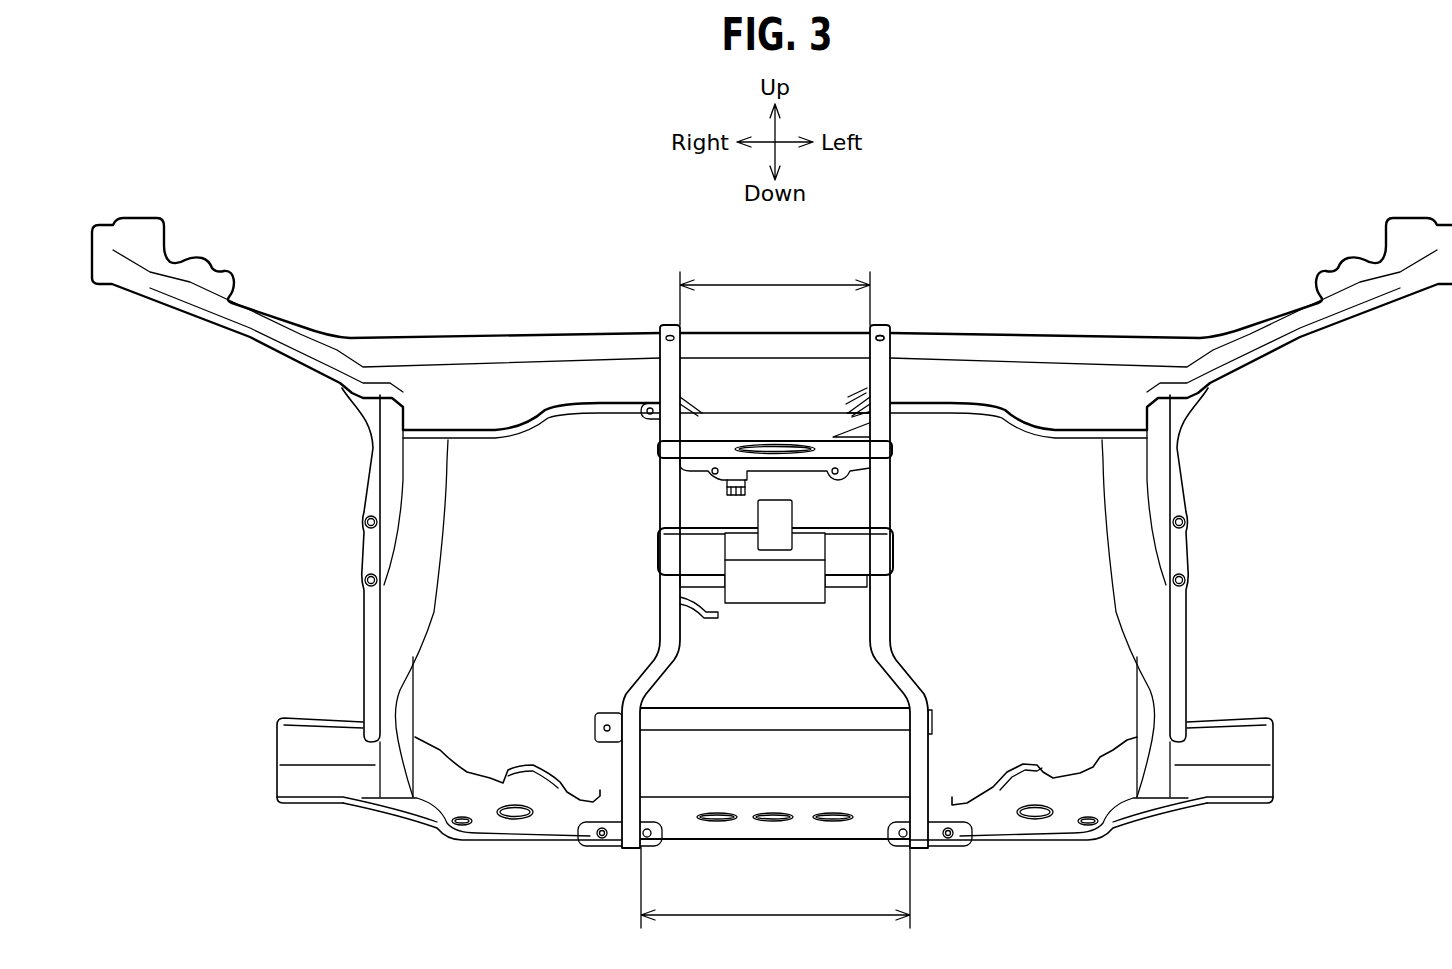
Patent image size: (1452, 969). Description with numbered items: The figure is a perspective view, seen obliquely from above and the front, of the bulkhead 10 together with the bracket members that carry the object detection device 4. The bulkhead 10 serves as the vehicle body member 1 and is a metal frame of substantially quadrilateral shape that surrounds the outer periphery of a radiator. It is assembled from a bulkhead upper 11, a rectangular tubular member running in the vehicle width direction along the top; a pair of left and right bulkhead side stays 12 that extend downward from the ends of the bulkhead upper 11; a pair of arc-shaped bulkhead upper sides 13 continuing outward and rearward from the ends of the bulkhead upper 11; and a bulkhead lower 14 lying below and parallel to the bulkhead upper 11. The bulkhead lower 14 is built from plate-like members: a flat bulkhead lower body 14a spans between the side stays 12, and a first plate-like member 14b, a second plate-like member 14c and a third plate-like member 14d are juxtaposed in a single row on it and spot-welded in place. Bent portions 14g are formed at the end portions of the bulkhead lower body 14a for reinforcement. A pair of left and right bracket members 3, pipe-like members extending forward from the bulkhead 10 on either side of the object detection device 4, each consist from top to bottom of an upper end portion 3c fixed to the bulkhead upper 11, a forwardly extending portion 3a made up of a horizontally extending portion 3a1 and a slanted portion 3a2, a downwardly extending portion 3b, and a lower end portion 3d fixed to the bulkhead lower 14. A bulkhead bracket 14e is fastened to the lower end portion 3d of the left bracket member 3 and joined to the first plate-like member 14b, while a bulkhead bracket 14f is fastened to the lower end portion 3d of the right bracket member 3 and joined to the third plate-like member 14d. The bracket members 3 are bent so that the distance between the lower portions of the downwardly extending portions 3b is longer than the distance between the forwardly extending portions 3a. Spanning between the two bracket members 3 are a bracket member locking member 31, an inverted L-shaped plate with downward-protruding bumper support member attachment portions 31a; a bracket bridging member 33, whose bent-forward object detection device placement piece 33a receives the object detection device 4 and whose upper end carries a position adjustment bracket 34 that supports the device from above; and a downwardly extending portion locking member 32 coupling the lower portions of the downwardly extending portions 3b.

The vehicle body member 1 is at (410, 294).
The bracket member 3 is at (827, 578).
The forwardly extending portion 3a is at (850, 558).
The horizontally extending portion 3a1 is at (893, 352).
The slanted portion 3a2 is at (883, 405).
The downwardly extending portion 3b is at (880, 472).
The upper end portion 3c is at (878, 327).
The lower end portion 3d is at (922, 845).
The object detection device 4 is at (773, 592).
The bulkhead 10 is at (772, 328).
The bulkhead upper 11 is at (909, 360).
The bulkhead side stay 12 is at (1133, 495).
The bulkhead upper side 13 is at (1287, 322).
The bulkhead lower 14 is at (802, 794).
The bulkhead lower body 14a is at (395, 812).
The first plate-like member 14b is at (1078, 782).
The second plate-like member 14c is at (777, 805).
The third plate-like member 14d is at (472, 782).
The bulkhead bracket 14e is at (950, 840).
The bulkhead bracket 14f is at (613, 840).
The bent portion 14g is at (313, 748).
The bracket member locking member 31 is at (790, 482).
The bumper support member attachment portion 31a is at (835, 478).
The downwardly extending portion locking member 32 is at (830, 705).
The bracket bridging member 33 is at (822, 571).
The object detection device placement piece 33a is at (842, 583).
The position adjustment bracket 34 is at (770, 520).